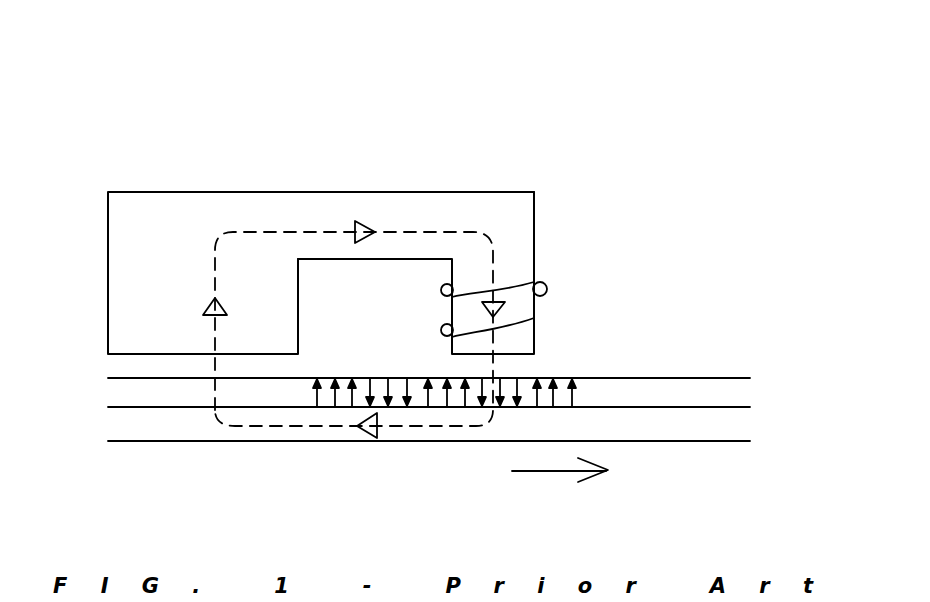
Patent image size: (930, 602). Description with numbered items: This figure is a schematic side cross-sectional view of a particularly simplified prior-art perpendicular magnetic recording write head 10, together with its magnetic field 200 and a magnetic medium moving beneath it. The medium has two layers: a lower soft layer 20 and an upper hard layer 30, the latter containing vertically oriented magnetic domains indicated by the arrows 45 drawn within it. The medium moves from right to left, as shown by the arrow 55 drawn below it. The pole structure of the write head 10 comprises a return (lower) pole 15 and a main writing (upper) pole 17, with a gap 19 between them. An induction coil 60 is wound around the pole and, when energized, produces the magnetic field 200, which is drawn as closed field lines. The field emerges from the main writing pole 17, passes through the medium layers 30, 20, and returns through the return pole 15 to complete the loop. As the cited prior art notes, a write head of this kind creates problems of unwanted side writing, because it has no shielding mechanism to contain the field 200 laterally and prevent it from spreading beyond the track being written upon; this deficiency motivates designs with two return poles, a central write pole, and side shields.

The write head 10 is at (350, 148).
The return pole 15 is at (127, 292).
The main writing pole 17 is at (535, 250).
The gap 19 is at (450, 307).
The lower soft layer 20 is at (716, 423).
The upper hard layer 30 is at (716, 393).
The arrows 45 is at (580, 392).
The arrow 55 is at (552, 473).
The induction coil 60 is at (578, 324).
The magnetic field 200 is at (483, 242).